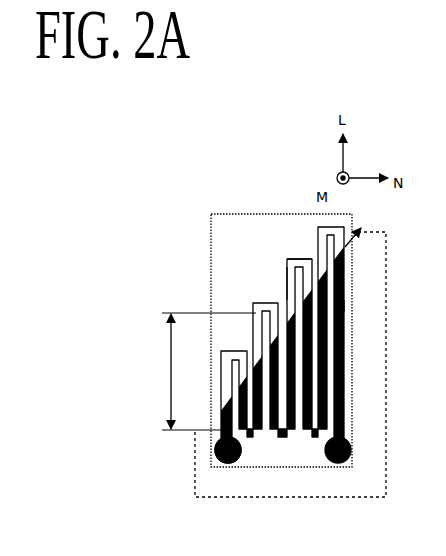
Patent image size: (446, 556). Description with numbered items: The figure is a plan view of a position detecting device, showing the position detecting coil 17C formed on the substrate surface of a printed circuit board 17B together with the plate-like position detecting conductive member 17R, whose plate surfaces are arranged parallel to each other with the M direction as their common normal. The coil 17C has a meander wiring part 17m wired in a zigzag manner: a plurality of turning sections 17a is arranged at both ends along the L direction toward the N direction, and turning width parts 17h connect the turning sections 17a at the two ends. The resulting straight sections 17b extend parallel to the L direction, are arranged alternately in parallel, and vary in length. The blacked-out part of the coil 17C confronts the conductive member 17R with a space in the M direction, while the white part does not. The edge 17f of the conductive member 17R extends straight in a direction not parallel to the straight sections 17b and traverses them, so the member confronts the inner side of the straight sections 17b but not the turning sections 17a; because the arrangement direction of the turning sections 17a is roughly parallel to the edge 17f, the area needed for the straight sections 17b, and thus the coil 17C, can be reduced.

The printed circuit board 17B is at (233, 225).
The position detecting conductive member 17R is at (371, 273).
The position detecting coil 17C is at (288, 277).
The turning section 17a is at (287, 259).
The straight section 17b is at (285, 297).
The meander wiring part 17m is at (345, 306).
The edge 17f is at (222, 432).
The turning width part 17h is at (197, 371).